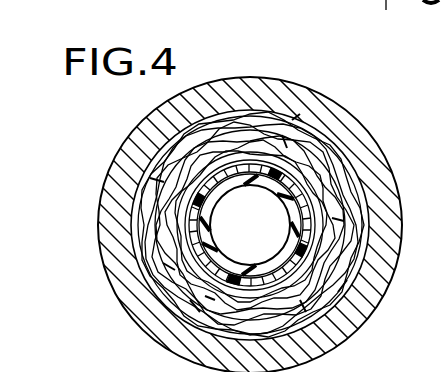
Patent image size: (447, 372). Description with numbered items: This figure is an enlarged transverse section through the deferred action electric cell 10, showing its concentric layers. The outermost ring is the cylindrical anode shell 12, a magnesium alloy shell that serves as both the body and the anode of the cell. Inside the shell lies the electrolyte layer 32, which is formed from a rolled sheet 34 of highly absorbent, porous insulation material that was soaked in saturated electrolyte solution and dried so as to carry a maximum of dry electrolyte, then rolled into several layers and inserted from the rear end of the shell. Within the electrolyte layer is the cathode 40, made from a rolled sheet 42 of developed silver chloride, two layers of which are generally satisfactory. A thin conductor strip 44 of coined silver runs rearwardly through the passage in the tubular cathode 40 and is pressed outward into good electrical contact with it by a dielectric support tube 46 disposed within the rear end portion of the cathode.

The deferred action electric cell 10 is at (331, 93).
The cylindrical anode shell 12 is at (392, 251).
The electrolyte layer 32 is at (339, 145).
The rolled sheet of absorbent insulation material 34 is at (352, 185).
The cathode 40 is at (183, 171).
The rolled sheet of silver halide material 42 is at (147, 188).
The conductor strip 44 is at (252, 172).
The dielectric support tube 46 is at (240, 266).